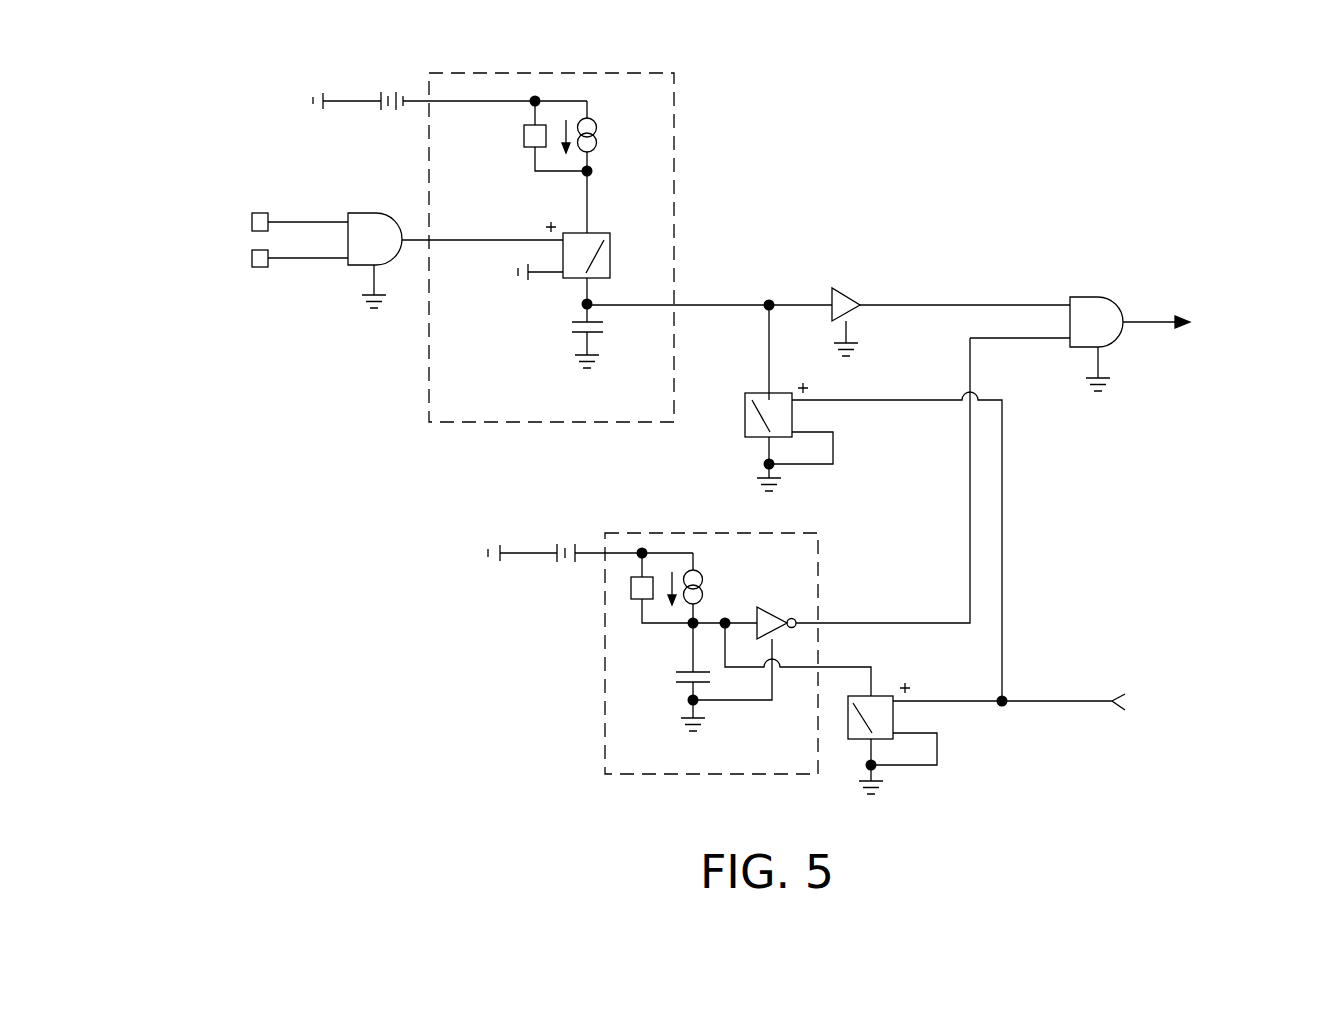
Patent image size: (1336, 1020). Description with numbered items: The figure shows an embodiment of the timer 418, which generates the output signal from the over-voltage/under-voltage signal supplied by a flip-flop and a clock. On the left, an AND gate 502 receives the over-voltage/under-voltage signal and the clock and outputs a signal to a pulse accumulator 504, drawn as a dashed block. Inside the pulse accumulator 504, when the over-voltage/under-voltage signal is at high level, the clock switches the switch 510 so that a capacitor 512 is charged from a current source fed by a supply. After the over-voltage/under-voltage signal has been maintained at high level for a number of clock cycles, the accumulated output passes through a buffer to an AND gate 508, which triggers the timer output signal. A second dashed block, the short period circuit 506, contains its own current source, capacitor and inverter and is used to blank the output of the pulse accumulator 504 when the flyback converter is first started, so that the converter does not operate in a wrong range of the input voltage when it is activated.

The timer 418 is at (1246, 129).
The AND gate 502 is at (373, 212).
The pulse accumulator 504 is at (675, 116).
The short period circuit 506 is at (604, 652).
The AND gate 508 is at (1093, 290).
The switch 510 is at (610, 246).
The capacitor 512 is at (562, 325).